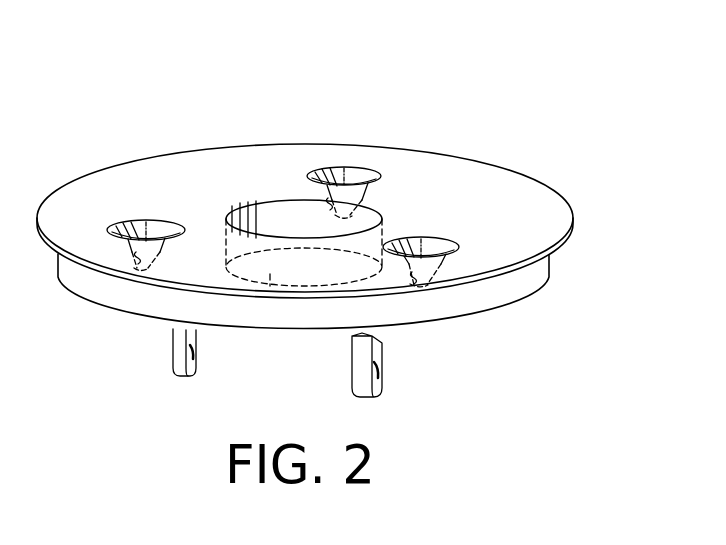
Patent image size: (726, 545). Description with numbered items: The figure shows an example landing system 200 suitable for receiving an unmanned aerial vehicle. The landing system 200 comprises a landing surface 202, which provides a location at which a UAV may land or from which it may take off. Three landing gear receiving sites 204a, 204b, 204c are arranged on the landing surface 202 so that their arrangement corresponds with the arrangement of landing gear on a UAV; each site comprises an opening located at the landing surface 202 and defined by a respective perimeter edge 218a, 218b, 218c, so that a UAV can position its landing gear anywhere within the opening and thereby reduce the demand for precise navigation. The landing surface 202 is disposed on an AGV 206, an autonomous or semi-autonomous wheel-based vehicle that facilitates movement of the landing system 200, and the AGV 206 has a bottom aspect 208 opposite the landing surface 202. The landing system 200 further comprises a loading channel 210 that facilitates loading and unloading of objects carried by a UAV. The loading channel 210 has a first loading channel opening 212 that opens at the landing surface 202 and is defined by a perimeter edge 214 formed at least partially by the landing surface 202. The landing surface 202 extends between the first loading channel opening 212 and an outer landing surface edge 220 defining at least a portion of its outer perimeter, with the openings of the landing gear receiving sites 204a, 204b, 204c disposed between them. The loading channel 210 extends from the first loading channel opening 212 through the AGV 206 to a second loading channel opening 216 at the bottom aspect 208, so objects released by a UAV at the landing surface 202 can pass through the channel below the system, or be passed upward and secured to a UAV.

The landing system 200 is at (123, 89).
The landing surface 202 is at (143, 180).
The landing gear receiving site 204a is at (429, 246).
The landing gear receiving site 204b is at (352, 168).
The landing gear receiving site 204c is at (150, 228).
The AGV 206 is at (531, 281).
The bottom aspect 208 is at (332, 336).
The loading channel 210 is at (221, 245).
The first loading channel opening 212 is at (285, 215).
The perimeter edge 214 is at (244, 211).
The second loading channel opening 216 is at (270, 274).
The perimeter edge 218a is at (413, 273).
The perimeter edge 218b is at (329, 199).
The perimeter edge 218c is at (134, 253).
The outer landing surface edge 220 is at (208, 148).